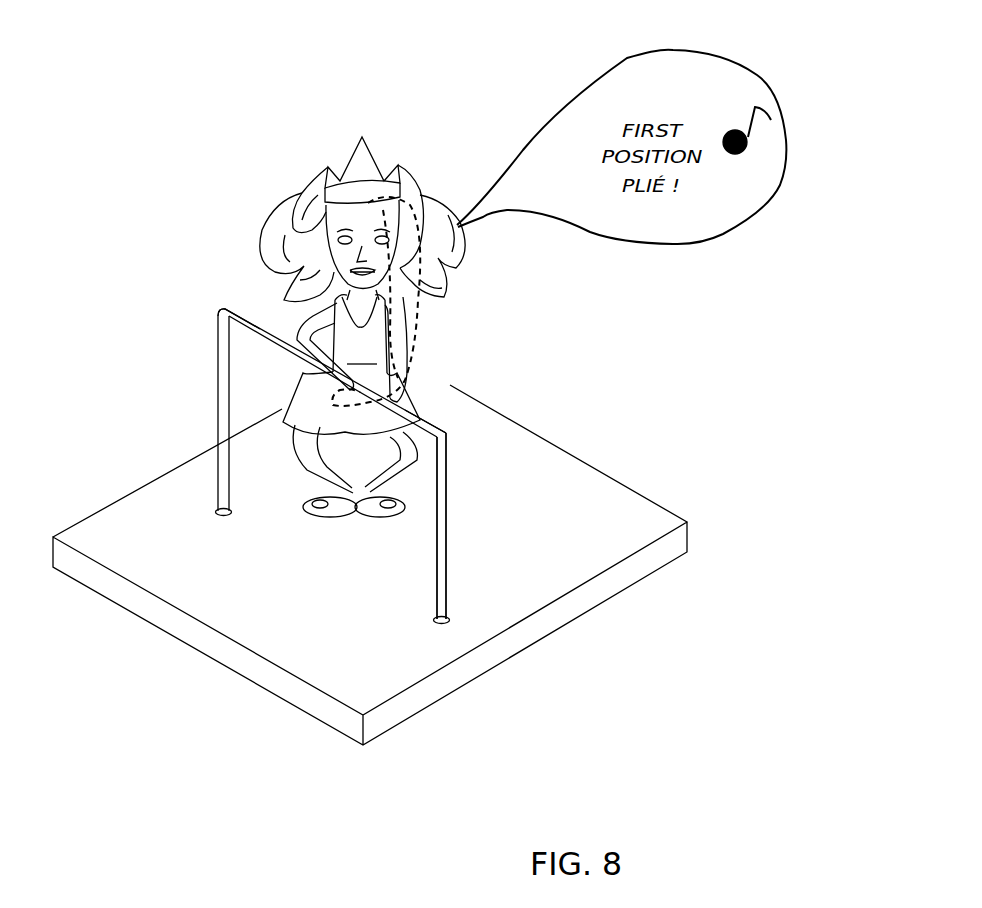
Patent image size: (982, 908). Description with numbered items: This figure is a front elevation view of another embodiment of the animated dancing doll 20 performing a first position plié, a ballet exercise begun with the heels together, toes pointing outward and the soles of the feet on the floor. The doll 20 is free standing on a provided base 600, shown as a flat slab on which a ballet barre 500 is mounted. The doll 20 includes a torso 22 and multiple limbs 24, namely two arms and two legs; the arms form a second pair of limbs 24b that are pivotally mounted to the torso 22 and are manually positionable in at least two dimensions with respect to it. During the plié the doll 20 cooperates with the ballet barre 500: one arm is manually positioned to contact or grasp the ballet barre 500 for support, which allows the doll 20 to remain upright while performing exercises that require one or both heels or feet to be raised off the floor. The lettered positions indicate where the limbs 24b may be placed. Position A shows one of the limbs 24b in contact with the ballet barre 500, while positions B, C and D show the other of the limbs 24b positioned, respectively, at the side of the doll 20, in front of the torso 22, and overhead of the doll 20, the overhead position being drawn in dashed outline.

The doll 20 is at (137, 154).
The torso 22 is at (362, 327).
The limbs 24 is at (455, 426).
The second pair of limbs 24b is at (272, 304).
The ballet barre 500 is at (447, 473).
The base 600 is at (172, 627).
The position A is at (269, 322).
The position B is at (444, 366).
The position C is at (436, 344).
The position D is at (447, 219).